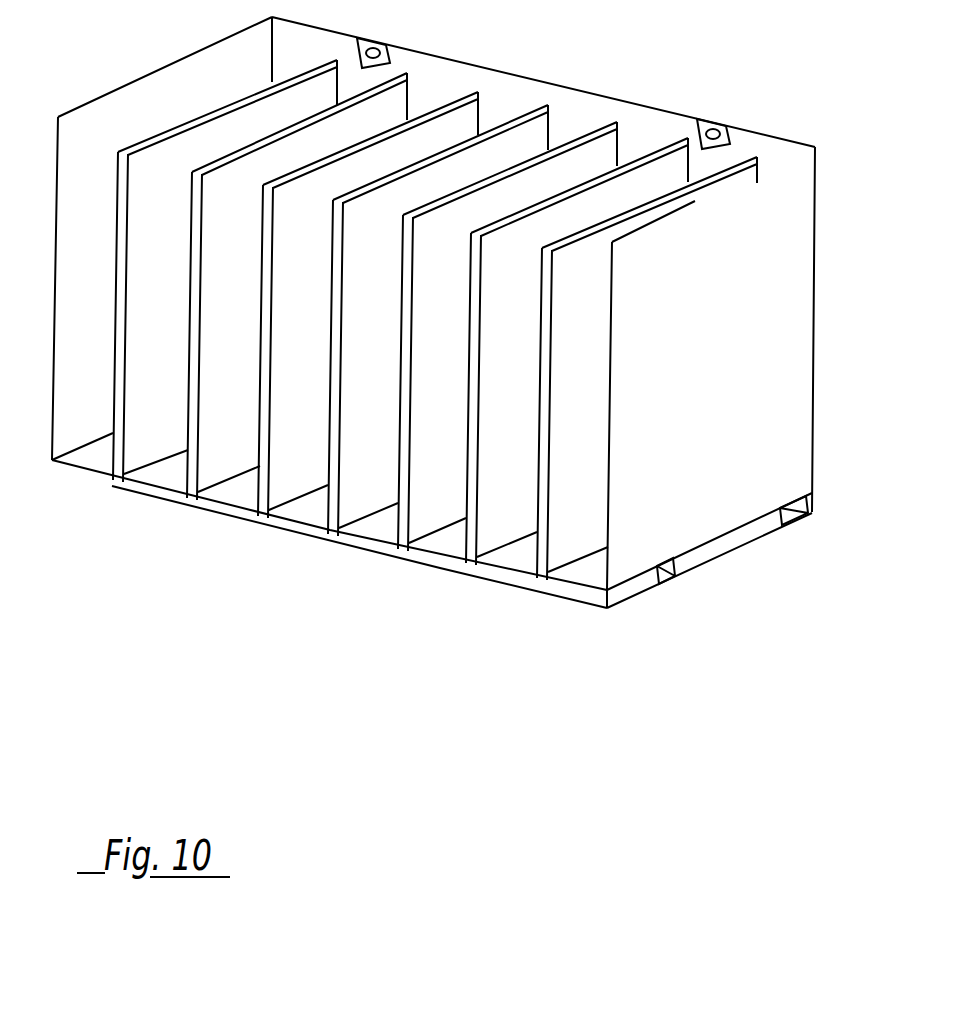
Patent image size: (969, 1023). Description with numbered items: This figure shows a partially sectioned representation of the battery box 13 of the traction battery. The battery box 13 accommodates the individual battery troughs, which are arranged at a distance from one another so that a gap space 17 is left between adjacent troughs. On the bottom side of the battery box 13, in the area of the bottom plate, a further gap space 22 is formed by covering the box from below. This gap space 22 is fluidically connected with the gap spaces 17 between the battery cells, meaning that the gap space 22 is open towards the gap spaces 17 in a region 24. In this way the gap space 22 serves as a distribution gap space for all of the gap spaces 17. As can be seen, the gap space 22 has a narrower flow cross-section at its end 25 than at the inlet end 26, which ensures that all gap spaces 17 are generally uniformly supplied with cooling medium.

The battery box 13 is at (735, 345).
The gap space 17 is at (328, 535).
The gap space 22 is at (732, 537).
The region 24 is at (468, 558).
The end 25 is at (127, 495).
The inlet end 26 is at (558, 637).